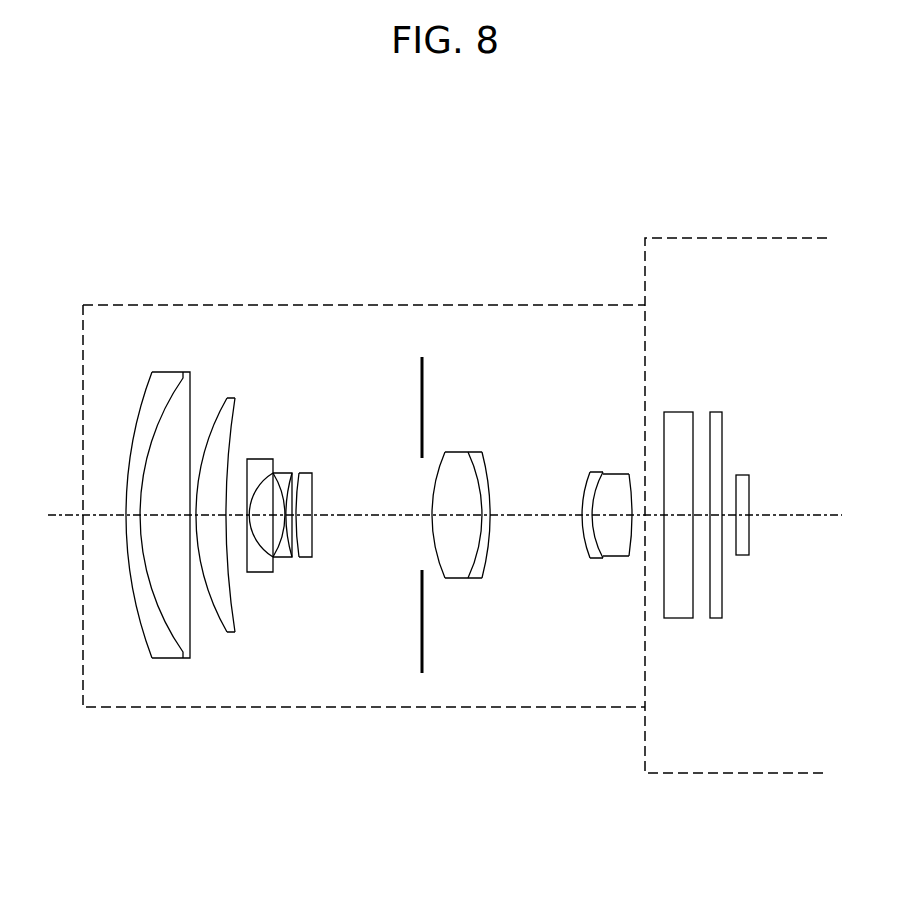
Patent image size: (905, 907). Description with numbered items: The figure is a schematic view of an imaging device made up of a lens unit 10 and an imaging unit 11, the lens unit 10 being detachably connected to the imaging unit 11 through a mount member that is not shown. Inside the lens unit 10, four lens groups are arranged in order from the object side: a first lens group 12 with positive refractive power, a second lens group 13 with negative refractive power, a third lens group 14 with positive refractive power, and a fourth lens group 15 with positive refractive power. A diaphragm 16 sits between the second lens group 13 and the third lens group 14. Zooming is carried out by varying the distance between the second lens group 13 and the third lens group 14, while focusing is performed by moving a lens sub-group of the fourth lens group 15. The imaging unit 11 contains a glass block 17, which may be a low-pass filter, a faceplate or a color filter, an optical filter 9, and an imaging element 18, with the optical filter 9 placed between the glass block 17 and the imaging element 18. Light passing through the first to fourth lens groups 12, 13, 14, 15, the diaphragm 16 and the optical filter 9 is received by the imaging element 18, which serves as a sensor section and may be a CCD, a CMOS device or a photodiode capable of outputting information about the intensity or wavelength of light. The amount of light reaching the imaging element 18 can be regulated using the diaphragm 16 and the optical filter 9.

The optical filter 9 is at (721, 412).
The lens unit 10 is at (227, 297).
The imaging unit 11 is at (673, 236).
The first lens group 12 is at (126, 359).
The second lens group 13 is at (245, 445).
The third lens group 14 is at (492, 444).
The fourth lens group 15 is at (635, 460).
The diaphragm 16 is at (421, 398).
The glass block 17 is at (675, 412).
The imaging element 18 is at (745, 475).